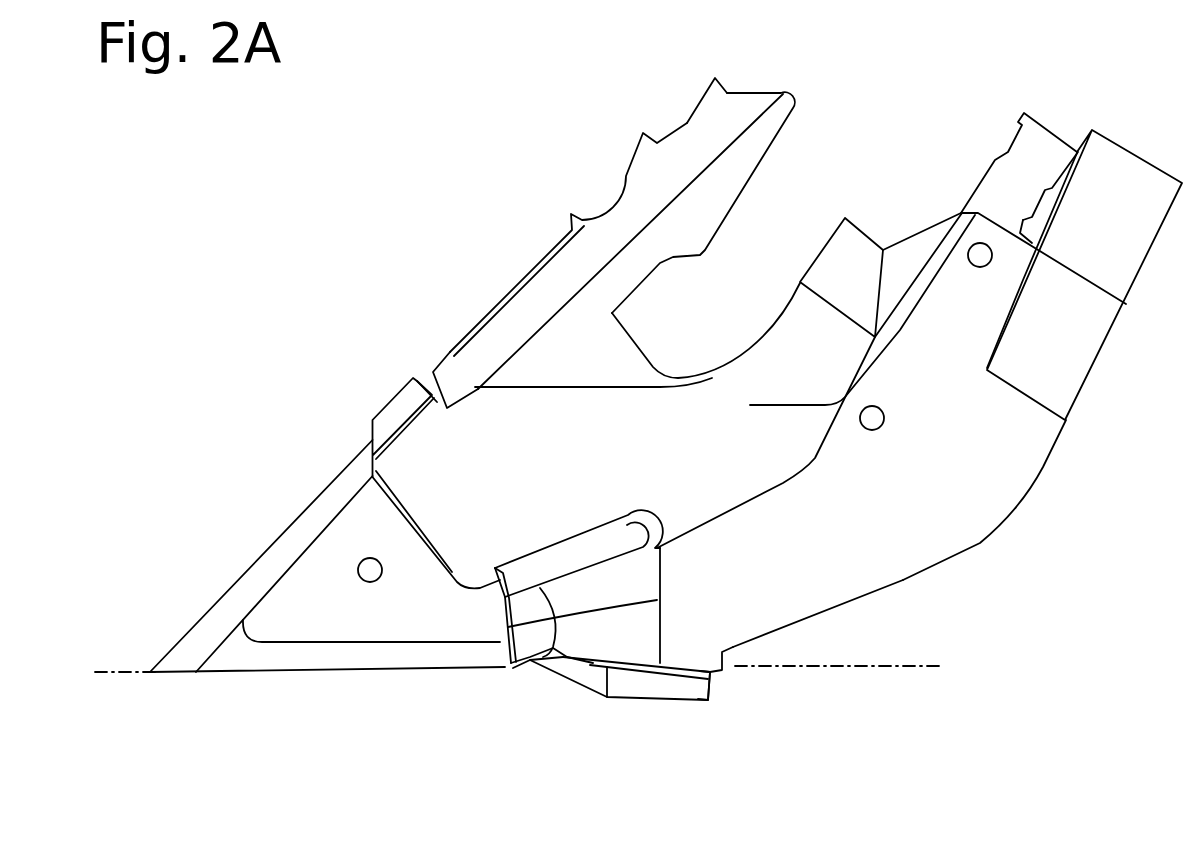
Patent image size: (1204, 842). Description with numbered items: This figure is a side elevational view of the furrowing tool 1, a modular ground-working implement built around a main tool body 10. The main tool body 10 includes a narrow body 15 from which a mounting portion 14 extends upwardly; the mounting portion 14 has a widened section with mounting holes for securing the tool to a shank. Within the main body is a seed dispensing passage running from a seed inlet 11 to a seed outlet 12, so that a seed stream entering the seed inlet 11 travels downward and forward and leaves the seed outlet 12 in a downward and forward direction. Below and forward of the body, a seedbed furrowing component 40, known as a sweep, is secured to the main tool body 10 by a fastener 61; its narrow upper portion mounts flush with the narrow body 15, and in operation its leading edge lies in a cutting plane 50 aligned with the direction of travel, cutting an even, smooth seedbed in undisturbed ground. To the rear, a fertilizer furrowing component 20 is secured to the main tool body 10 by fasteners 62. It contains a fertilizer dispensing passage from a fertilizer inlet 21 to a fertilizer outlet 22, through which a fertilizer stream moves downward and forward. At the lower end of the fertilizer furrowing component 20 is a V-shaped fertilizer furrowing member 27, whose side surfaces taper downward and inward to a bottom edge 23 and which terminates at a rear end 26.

The furrowing tool 1 is at (520, 136).
The main tool body 10 is at (517, 272).
The seed inlet 11 is at (875, 231).
The seed outlet 12 is at (495, 667).
The mounting portion 14 is at (682, 147).
The narrow body 15 is at (413, 458).
The fertilizer furrowing component 20 is at (925, 543).
The fertilizer inlet 21 is at (1143, 140).
The fertilizer outlet 22 is at (778, 636).
The bottom edge 23 is at (617, 697).
The rear end 26 is at (712, 688).
The fertilizer furrowing member 27 is at (668, 688).
The seedbed furrowing component 40 is at (287, 597).
The cutting plane 50 is at (120, 675).
The fastener 61 is at (363, 581).
The fasteners 62 is at (980, 243).